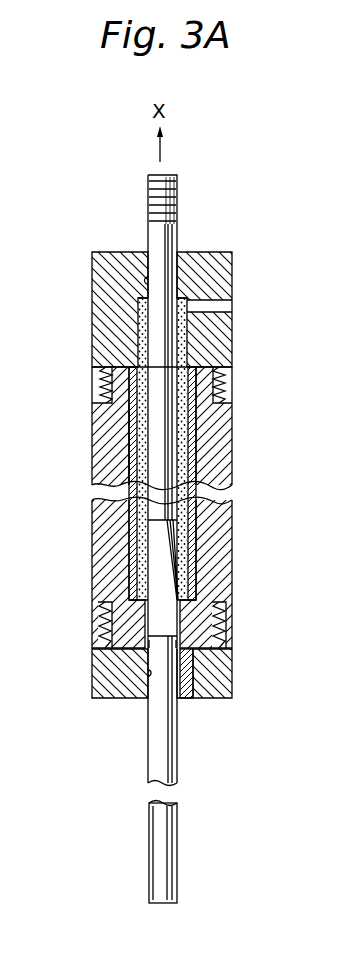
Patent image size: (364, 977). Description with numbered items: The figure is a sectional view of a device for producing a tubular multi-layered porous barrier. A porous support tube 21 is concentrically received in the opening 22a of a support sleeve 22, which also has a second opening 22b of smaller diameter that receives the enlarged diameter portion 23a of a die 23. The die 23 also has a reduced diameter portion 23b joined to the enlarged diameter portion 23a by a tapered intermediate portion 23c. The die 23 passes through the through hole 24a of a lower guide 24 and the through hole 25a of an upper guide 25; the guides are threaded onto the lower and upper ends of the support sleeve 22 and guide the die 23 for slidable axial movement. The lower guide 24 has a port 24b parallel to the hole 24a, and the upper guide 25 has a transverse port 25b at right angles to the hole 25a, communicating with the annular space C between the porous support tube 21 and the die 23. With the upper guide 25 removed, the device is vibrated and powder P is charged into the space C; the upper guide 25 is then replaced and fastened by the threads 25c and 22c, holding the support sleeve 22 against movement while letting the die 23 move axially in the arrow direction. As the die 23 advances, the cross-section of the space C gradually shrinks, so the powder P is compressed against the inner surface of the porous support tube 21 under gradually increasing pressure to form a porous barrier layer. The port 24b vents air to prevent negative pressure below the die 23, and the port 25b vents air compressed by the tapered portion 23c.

The porous support tube 21 is at (200, 460).
The support sleeve 22 is at (216, 533).
The opening 22a is at (194, 418).
The second opening 22b is at (147, 624).
The threads 22c is at (217, 380).
The die 23 is at (138, 724).
The enlarged diameter portion 23a is at (181, 626).
The reduced diameter portion 23b is at (157, 462).
The tapered intermediate portion 23c is at (162, 566).
The guide 24 is at (107, 668).
The through hole 24a is at (150, 676).
The port 24b is at (196, 672).
The guide 25 is at (105, 308).
The through hole 25a is at (146, 281).
The transverse port 25b is at (222, 309).
The threads 25c is at (104, 386).
The annular space C is at (120, 432).
The powder P is at (140, 528).